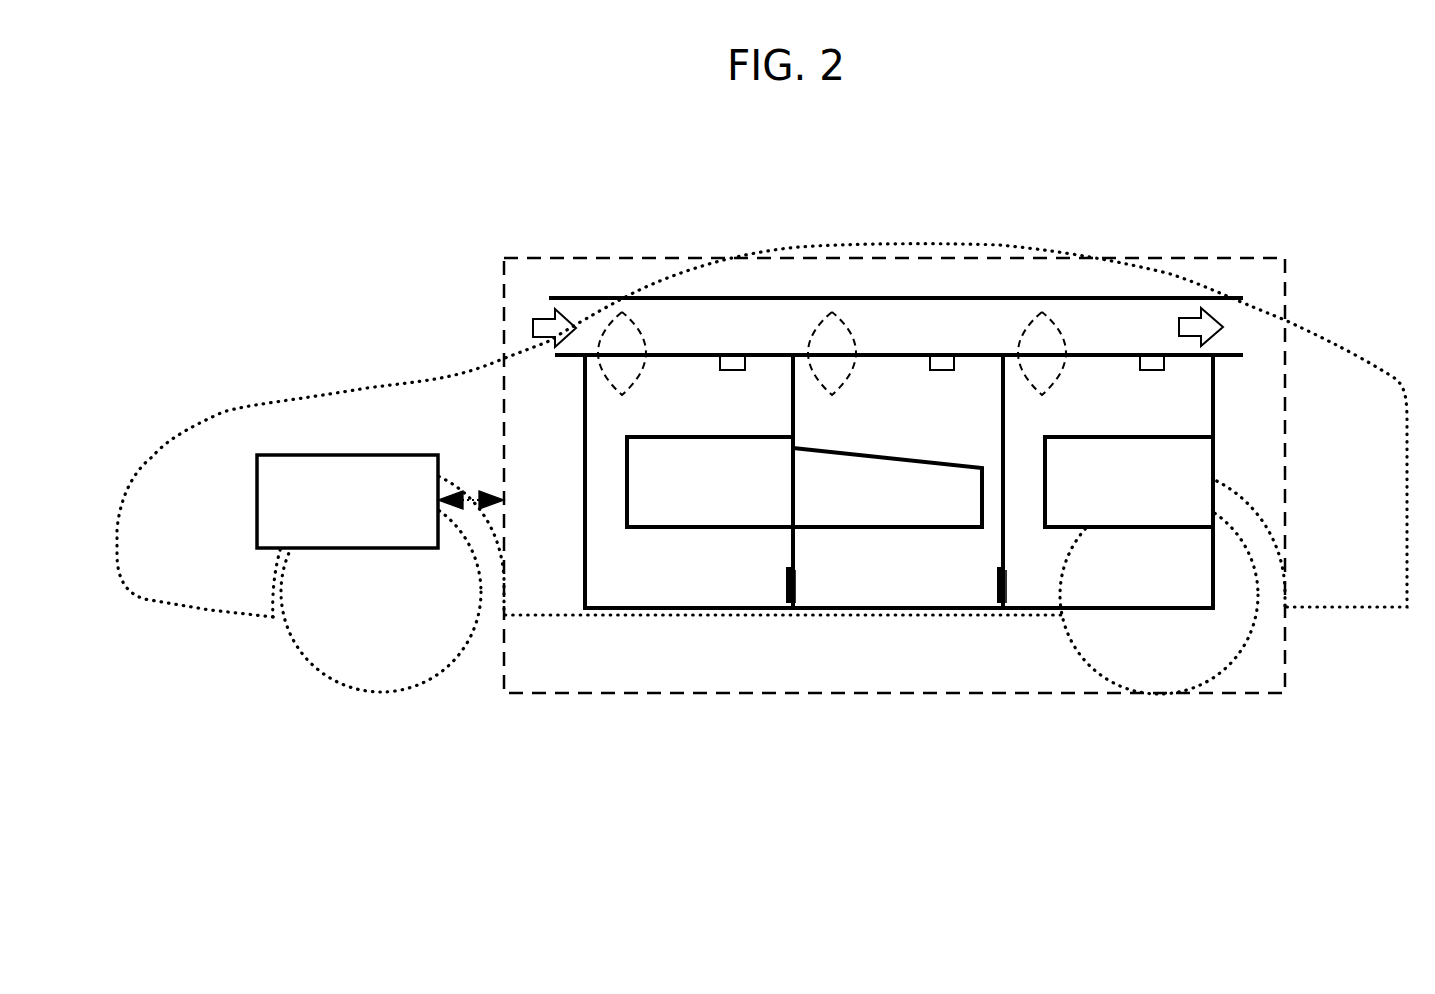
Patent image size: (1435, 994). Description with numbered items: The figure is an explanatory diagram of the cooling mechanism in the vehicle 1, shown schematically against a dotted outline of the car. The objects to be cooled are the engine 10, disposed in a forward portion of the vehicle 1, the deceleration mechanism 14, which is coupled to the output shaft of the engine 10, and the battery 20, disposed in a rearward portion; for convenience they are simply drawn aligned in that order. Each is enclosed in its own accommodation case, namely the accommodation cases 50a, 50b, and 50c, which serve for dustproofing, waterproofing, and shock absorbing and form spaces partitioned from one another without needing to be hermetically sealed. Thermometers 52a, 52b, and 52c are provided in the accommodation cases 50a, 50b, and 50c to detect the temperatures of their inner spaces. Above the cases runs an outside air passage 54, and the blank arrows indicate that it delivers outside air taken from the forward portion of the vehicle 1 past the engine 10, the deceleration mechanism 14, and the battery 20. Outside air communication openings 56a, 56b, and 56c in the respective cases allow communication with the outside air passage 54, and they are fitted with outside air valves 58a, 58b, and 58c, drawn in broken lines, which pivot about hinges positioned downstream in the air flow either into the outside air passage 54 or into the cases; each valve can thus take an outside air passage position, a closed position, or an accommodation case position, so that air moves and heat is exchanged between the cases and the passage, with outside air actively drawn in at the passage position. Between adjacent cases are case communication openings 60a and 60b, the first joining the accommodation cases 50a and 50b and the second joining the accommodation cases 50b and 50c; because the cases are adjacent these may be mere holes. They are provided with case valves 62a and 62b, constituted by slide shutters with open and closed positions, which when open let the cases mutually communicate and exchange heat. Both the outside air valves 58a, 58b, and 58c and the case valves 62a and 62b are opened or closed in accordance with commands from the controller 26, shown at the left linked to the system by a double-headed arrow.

The vehicle 1 is at (937, 193).
The controller 26 is at (355, 452).
The engine 10 is at (710, 530).
The deceleration mechanism 14 is at (952, 530).
The battery 20 is at (1172, 530).
The outside air passage 54 is at (926, 339).
The accommodation case 50a is at (705, 610).
The accommodation case 50b is at (912, 610).
The accommodation case 50c is at (1118, 610).
The thermometer 52a is at (735, 372).
The thermometer 52b is at (944, 372).
The thermometer 52c is at (1154, 372).
The outside air communication opening 56a is at (598, 358).
The outside air communication opening 56b is at (808, 358).
The outside air communication opening 56c is at (1018, 358).
The outside air valve 58a is at (622, 356).
The outside air valve 58b is at (832, 356).
The outside air valve 58c is at (1042, 356).
The case communication opening 60a is at (796, 574).
The case communication opening 60b is at (1008, 574).
The case valve 62a is at (796, 597).
The case valve 62b is at (1008, 597).